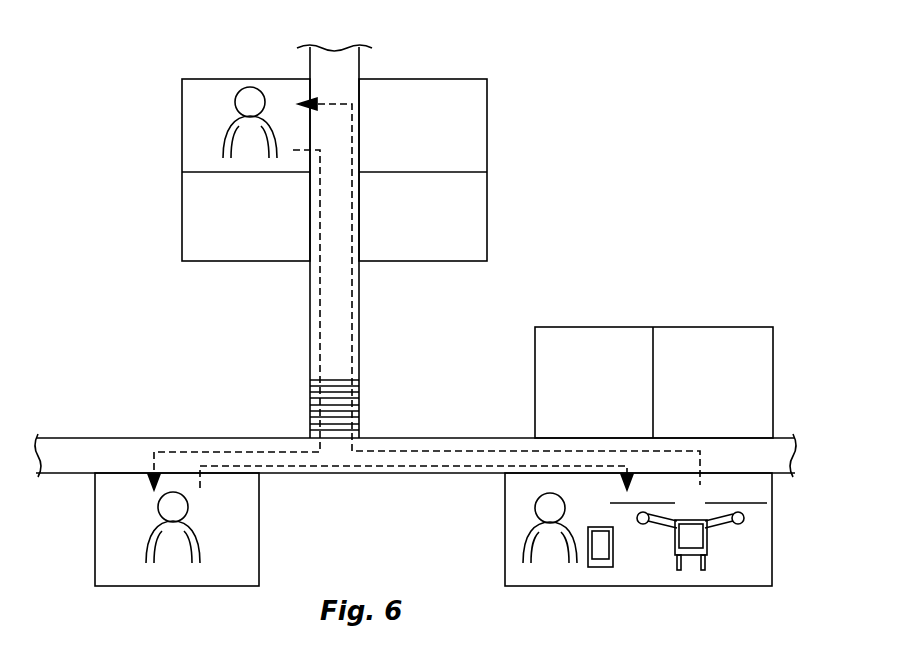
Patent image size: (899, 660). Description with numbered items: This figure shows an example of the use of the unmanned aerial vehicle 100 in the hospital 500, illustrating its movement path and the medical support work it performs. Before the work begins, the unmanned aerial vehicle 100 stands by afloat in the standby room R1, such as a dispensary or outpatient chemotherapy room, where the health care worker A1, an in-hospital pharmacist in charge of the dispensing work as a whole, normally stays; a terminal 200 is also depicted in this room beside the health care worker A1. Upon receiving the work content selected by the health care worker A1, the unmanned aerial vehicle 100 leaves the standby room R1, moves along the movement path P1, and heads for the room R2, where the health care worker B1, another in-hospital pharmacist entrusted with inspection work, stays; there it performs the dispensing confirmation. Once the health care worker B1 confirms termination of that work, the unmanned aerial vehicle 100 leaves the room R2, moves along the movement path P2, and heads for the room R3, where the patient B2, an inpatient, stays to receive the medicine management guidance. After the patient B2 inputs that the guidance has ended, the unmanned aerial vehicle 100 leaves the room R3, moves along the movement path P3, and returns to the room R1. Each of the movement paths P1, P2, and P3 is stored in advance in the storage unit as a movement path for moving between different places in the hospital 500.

The hospital 500 is at (88, 45).
The room R2 is at (182, 88).
The health care worker B1 is at (222, 152).
The movement path P2 is at (310, 304).
The movement path P1 is at (447, 450).
The movement path P3 is at (355, 474).
The room R3 is at (100, 503).
The patient B2 is at (146, 553).
The standby room R1 is at (760, 559).
The health care worker A1 is at (522, 552).
The mobile terminal 200 is at (601, 566).
The unmanned aerial vehicle 100 is at (715, 569).